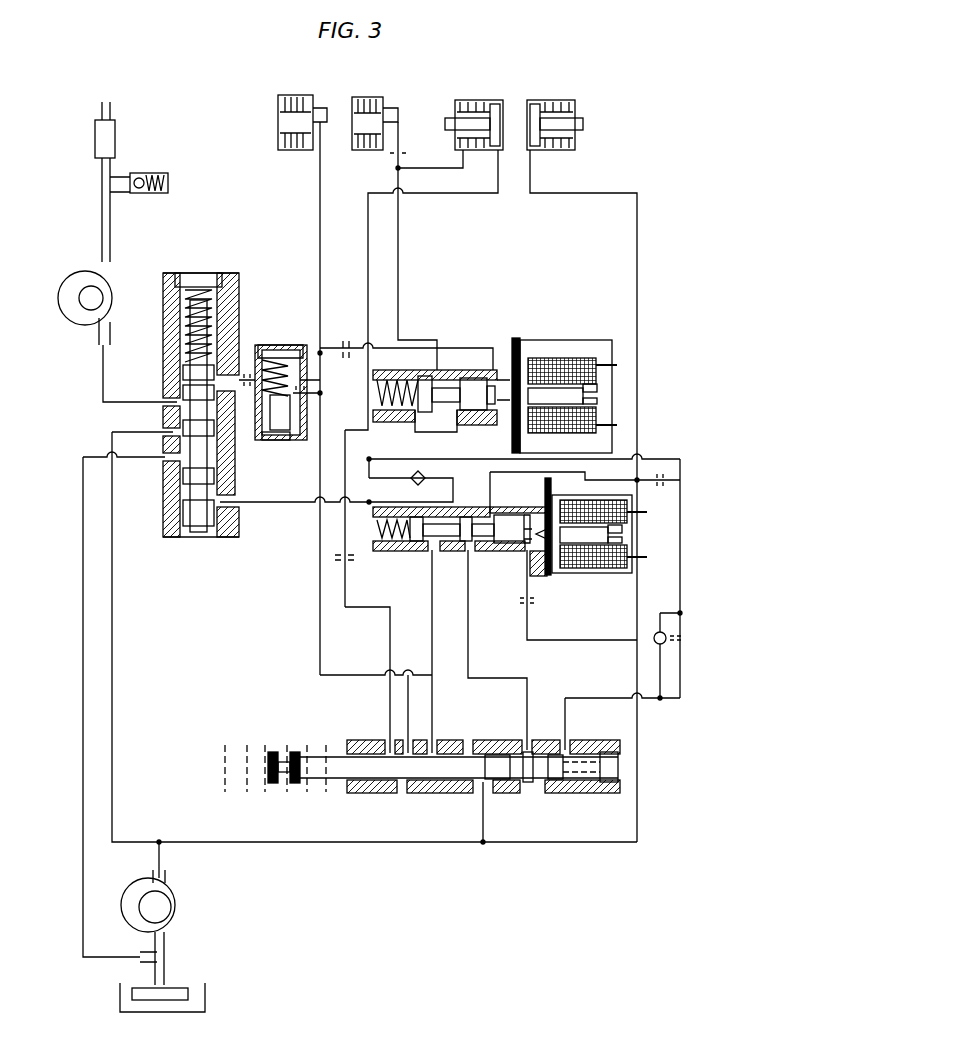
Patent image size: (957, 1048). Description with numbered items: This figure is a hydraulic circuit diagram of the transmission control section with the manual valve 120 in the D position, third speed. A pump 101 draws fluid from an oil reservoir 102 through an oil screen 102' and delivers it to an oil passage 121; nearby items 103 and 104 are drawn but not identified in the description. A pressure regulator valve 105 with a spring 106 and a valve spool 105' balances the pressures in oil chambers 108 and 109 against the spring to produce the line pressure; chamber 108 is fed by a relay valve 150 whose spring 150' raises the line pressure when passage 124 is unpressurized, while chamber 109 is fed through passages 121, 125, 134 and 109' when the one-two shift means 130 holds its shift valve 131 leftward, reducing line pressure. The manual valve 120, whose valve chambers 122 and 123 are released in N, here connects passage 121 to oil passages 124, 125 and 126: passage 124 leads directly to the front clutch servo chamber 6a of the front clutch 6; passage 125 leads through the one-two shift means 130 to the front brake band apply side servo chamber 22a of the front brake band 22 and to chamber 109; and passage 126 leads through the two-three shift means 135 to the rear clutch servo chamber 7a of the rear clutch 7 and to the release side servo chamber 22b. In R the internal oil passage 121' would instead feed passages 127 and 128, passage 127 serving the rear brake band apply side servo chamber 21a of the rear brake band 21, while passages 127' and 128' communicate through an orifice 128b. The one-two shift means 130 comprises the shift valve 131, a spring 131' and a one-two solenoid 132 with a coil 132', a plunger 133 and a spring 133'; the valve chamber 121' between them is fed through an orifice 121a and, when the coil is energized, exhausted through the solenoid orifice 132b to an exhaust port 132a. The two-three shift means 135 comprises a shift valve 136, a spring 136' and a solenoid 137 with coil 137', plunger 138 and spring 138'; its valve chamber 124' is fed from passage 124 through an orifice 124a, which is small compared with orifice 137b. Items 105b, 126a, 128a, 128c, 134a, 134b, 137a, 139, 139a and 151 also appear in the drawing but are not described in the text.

The hydraulic servo 6 is at (290, 96).
The front clutch servo chamber 6a is at (317, 106).
The hydraulic servo 7 is at (365, 97).
The rear clutch servo chamber 7a is at (391, 107).
The clutch 21 is at (575, 103).
The rear brake band apply side servo chamber 21a is at (535, 104).
The clutch 22 is at (462, 92).
The front brake band apply side servo chamber 22a is at (497, 104).
The front brake band release side servo chamber 22b is at (485, 100).
The pump 101 is at (173, 894).
The oil reservoir 102 is at (191, 1000).
The oil screen 102' is at (175, 976).
The relief valve 103 is at (157, 193).
The oil filter 104 is at (115, 136).
The pressure regulator valve 105 is at (201, 381).
The valve spool 105' is at (164, 416).
The spool land 105b is at (180, 412).
The spring 106 is at (183, 300).
The oil chamber 108 is at (182, 384).
The oil chamber 109 is at (167, 506).
The oil passage 109' is at (294, 519).
The manual valve 120 is at (335, 778).
The oil passage 121 is at (374, 638).
The oil passage 121' is at (559, 663).
The orifice 121a is at (527, 620).
The valve chamber 122 is at (433, 794).
The valve chamber 123 is at (540, 792).
The oil passage 124 is at (378, 437).
The valve chamber 124' is at (541, 390).
The orifice 124a is at (345, 345).
The oil passage 125 is at (408, 690).
The oil passage 126 is at (390, 635).
The passage 126a is at (345, 580).
The oil passage 127 is at (497, 650).
The oil passage 127' is at (583, 496).
The oil passage 128 is at (622, 710).
The oil passage 128' is at (523, 455).
The bypass passage 128a is at (688, 640).
The orifice 128b is at (668, 480).
The check valve 128c is at (653, 638).
The 1-2 shift means 130 is at (630, 553).
The 1-2 shift valve 131 is at (460, 556).
The spring 131' is at (439, 551).
The 1-2 solenoid 132 is at (613, 564).
The coil 132' is at (589, 558).
The exhaust port 132a is at (538, 503).
The solenoid orifice 132b is at (527, 582).
The plunger 133 is at (591, 542).
The spring 133' is at (623, 524).
The oil passage 134 is at (368, 255).
The orifice 134a is at (335, 557).
The check valve passage 134b is at (416, 475).
The 2-3 shift means 135 is at (612, 425).
The 2-3 shift valve 136 is at (435, 377).
The spring 136' is at (436, 362).
The 2-3 solenoid 137 is at (580, 378).
The coil 137' is at (568, 343).
The plunger 137a is at (512, 368).
The orifice 137b is at (507, 400).
The plunger 138 is at (632, 400).
The spring 138' is at (635, 378).
The passage 139 is at (398, 255).
The passage 139a is at (392, 164).
The relay valve 150 is at (273, 409).
The spring 150' is at (286, 363).
The passage 151 is at (305, 379).